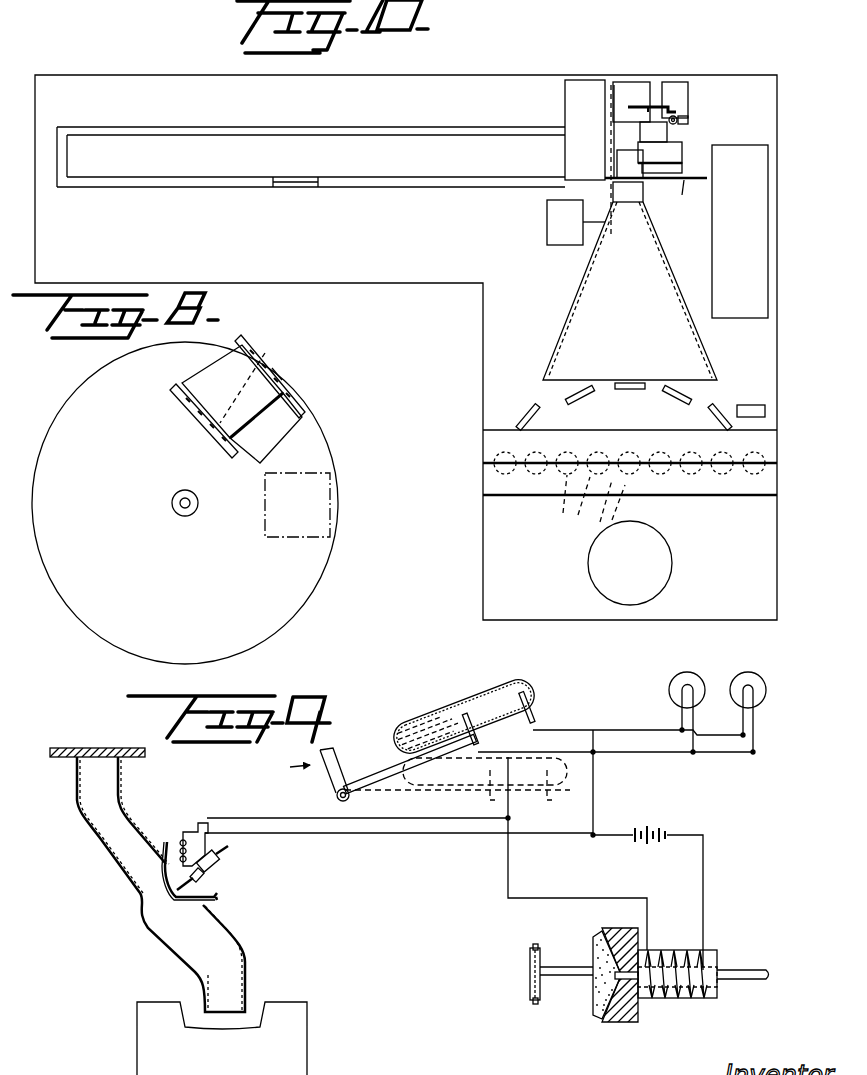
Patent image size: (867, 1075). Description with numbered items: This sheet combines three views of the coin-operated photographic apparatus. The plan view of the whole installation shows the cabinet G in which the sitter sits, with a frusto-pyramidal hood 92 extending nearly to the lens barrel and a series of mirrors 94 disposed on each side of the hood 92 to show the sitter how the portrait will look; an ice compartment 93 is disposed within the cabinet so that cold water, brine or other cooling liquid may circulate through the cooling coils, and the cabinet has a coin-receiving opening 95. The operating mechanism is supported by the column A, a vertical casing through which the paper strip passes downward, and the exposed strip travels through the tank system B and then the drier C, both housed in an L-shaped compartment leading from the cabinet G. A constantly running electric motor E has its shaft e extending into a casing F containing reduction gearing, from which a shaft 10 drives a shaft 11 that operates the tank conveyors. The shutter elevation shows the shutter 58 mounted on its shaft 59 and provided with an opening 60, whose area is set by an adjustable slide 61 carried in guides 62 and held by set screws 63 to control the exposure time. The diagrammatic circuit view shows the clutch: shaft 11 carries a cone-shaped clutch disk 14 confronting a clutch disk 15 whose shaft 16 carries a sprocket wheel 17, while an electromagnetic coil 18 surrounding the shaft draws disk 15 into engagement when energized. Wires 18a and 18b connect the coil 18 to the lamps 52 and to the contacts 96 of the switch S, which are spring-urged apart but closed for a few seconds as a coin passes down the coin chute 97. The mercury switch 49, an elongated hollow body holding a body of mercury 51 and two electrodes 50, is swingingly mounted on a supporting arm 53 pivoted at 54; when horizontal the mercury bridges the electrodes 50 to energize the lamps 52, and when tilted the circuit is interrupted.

In FIG. 10, the shaft 10 is at (683, 118).
In FIG. 10, the shaft 11 is at (688, 126).
In FIG. 8, the shaft 11 is at (292, 375).
In FIG. 9, the shaft 11 is at (740, 977).
In FIG. 9, the cone-shaped clutch disk 14 is at (630, 928).
In FIG. 9, the clutch disk 15 is at (593, 1003).
In FIG. 9, the shaft 16 is at (572, 973).
In FIG. 9, the sprocket wheel 17 is at (530, 985).
In FIG. 9, the electromagnetic coil 18 is at (673, 997).
In FIG. 9, the wire 18a is at (595, 806).
In FIG. 9, the wire 18b is at (508, 875).
In FIG. 9, the mercury switch 49 is at (426, 701).
In FIG. 9, the electrodes 50 is at (524, 718).
In FIG. 9, the body of mercury 51 is at (456, 695).
In FIG. 10, the lamps 52 is at (590, 507).
In FIG. 9, the lamps 52 is at (760, 680).
In FIG. 9, the supporting arm 53 is at (370, 775).
In FIG. 9, the pivot 54 is at (350, 797).
In FIG. 10, the shutter 58 is at (700, 179).
In FIG. 8, the shutter 58 is at (185, 503).
In FIG. 8, the shaft 59 is at (180, 518).
In FIG. 8, the opening 60 is at (299, 418).
In FIG. 8, the adjustable slide 61 is at (232, 391).
In FIG. 8, the guides 62 is at (250, 363).
In FIG. 8, the set screws 63 is at (285, 392).
In FIG. 10, the hood 92 is at (560, 345).
In FIG. 10, the ice compartment 93 is at (758, 295).
In FIG. 10, the mirrors 94 is at (530, 415).
In FIG. 10, the coin-receiving opening 95 is at (765, 410).
In FIG. 9, the coin-receiving opening 95 is at (82, 770).
In FIG. 9, the contacts 96 is at (211, 860).
In FIG. 9, the coin chute 97 is at (118, 855).
In FIG. 10, the column A is at (682, 198).
In FIG. 10, the tank system B is at (345, 188).
In FIG. 10, the drier C is at (427, 163).
In FIG. 10, the electric motor E is at (635, 85).
In FIG. 10, the motor shaft e is at (677, 88).
In FIG. 10, the casing F is at (688, 90).
In FIG. 10, the cabinet G is at (483, 403).
In FIG. 9, the switch S is at (210, 883).